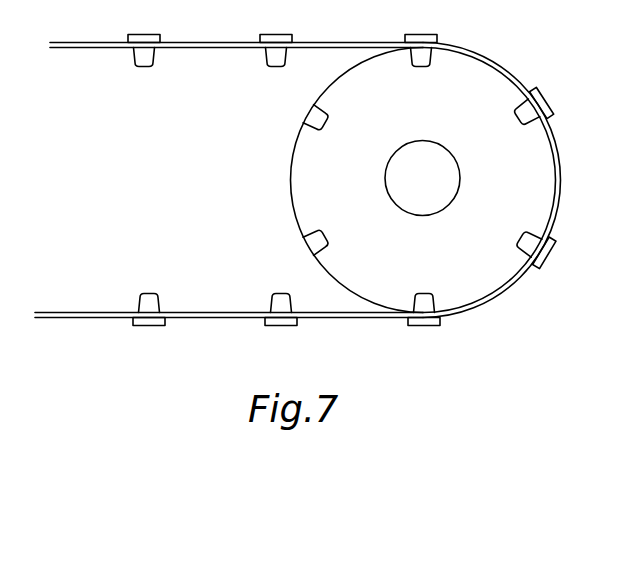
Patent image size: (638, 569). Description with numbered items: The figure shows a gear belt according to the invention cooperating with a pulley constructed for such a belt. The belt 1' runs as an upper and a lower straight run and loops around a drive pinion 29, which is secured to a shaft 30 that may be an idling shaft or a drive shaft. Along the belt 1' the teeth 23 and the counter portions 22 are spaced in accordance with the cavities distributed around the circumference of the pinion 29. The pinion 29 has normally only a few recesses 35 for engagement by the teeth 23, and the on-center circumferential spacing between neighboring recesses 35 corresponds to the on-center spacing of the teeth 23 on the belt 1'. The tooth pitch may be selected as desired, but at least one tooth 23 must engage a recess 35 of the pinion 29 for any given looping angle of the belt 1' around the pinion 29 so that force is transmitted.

The belt 1' is at (298, 200).
The counter portion 22 is at (281, 33).
The tooth 23 is at (141, 53).
The drive pinion 29 is at (480, 75).
The shaft 30 is at (448, 179).
The recess 35 is at (318, 118).